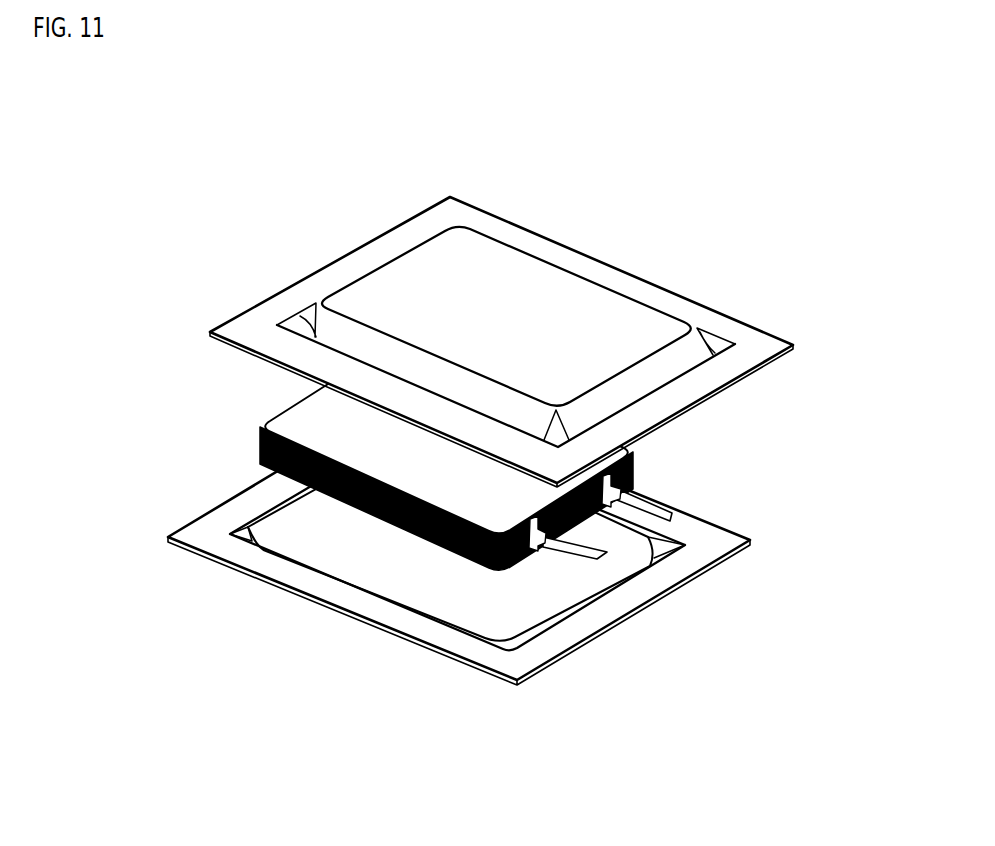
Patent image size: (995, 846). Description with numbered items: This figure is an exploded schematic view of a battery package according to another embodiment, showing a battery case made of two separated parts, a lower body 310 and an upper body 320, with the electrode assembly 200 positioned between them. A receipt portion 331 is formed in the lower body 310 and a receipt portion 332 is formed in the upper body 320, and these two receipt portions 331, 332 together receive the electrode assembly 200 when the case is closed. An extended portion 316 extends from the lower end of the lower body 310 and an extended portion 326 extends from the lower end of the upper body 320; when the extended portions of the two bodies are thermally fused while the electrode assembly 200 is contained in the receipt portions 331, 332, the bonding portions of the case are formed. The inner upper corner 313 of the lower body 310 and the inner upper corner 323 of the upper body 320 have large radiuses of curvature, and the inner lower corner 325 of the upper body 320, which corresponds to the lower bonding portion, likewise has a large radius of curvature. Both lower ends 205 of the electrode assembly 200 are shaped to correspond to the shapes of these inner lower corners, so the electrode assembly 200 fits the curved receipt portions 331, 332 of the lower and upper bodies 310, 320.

The electrode assembly 200 is at (633, 456).
The lower ends of the electrode assembly 205 is at (257, 439).
The lower body 310 is at (652, 608).
The inner upper corner 313 is at (650, 548).
The extended portion 316 is at (227, 518).
The upper body 320 is at (496, 213).
The inner upper corner 323 is at (713, 340).
The inner lower corner 325 is at (293, 313).
The extended portion 326 is at (355, 262).
The receipt portion 331 is at (497, 623).
The receipt portion 332 is at (447, 263).